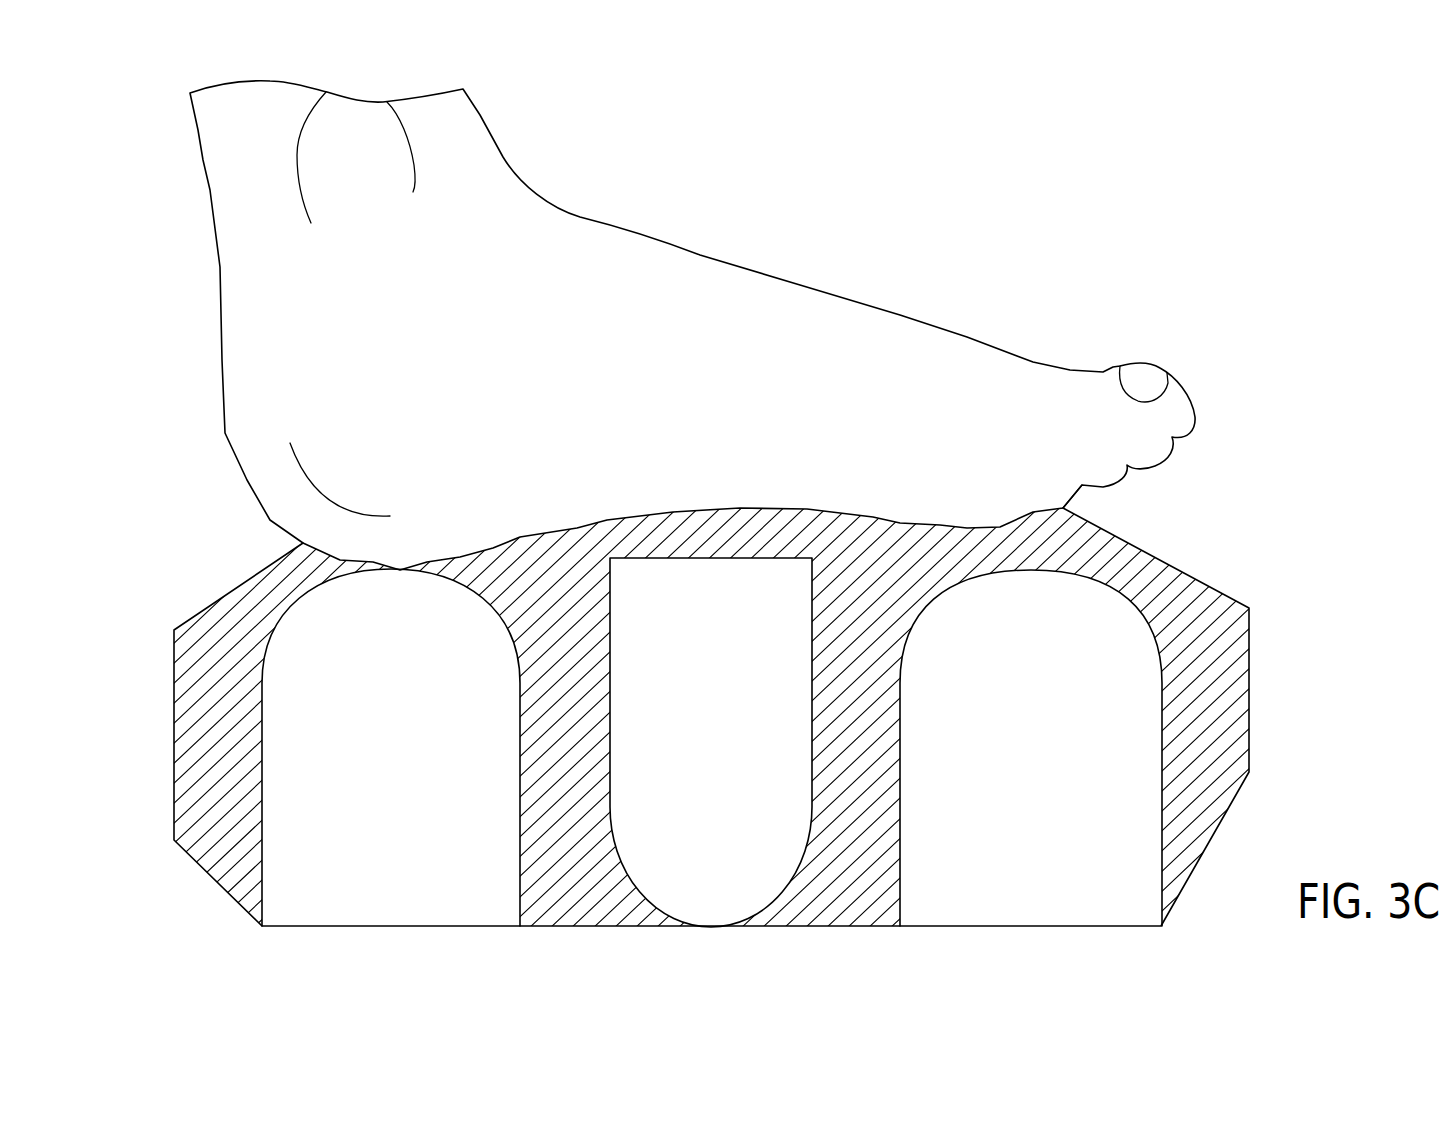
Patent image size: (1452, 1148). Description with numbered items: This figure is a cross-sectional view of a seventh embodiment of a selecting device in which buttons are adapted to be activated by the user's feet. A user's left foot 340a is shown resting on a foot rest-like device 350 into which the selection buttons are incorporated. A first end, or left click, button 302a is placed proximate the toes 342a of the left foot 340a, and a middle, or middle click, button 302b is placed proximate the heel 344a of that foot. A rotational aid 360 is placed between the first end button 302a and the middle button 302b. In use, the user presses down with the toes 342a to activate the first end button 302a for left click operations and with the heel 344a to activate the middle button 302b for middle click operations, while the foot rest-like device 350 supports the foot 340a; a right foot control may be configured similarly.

The left foot 340a is at (385, 342).
The toes 342a is at (1032, 377).
The heel 344a is at (268, 390).
The foot rest-like device 350 is at (1215, 595).
The first end button 302a is at (1062, 667).
The middle button 302b is at (420, 667).
The rotational aid 360 is at (725, 667).